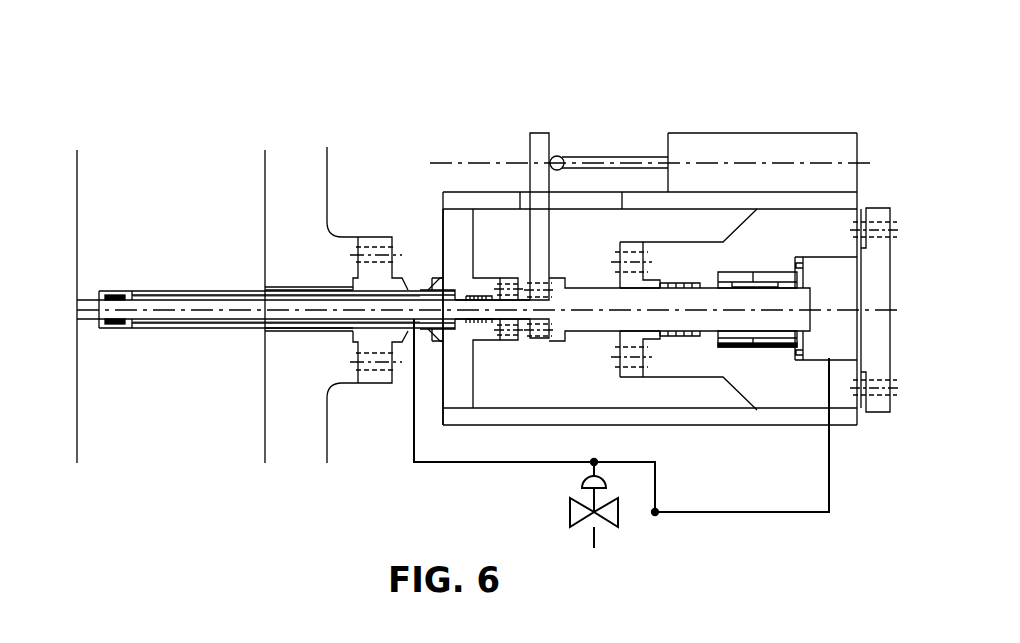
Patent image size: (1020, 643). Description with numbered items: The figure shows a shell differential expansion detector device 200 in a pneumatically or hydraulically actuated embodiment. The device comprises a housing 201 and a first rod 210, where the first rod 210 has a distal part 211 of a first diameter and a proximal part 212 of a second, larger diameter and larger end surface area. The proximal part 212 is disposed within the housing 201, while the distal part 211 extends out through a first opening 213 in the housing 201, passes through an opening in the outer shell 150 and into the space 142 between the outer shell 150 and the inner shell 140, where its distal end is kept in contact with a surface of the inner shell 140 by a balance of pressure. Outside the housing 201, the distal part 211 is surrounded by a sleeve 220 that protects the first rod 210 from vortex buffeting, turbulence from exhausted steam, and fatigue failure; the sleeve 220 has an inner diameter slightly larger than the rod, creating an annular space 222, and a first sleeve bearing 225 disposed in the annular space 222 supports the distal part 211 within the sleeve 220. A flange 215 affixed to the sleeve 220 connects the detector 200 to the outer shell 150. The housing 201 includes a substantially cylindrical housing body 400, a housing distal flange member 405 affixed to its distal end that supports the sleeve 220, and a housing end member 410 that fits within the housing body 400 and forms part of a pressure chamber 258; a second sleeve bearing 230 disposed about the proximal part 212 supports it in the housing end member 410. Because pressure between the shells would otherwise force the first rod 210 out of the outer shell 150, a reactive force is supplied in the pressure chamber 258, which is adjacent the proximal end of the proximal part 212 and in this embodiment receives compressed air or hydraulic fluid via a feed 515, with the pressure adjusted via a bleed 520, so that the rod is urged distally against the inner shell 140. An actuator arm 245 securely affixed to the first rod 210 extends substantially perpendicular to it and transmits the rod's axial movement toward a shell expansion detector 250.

The inner shell 140 is at (68, 268).
The space 142 is at (247, 272).
The outer shell 150 is at (315, 365).
The shell differential expansion detector device 200 is at (562, 75).
The housing 201 is at (520, 395).
The first rod 210 is at (468, 305).
The distal part 211 is at (168, 323).
The proximal part 212 is at (714, 320).
The first opening 213 is at (456, 278).
The flange 215 is at (368, 262).
The sleeve 220 is at (160, 291).
The annular space 222 is at (233, 321).
The first sleeve bearing 225 is at (113, 292).
The second sleeve bearing 230 is at (730, 268).
The actuator arm 245 is at (538, 230).
The shell expansion detector 250 is at (717, 159).
The pressure chamber 258 is at (842, 352).
The housing body 400 is at (454, 204).
The housing distal flange member 405 is at (452, 226).
The housing end member 410 is at (802, 226).
The feed 515 is at (570, 512).
The bleed 520 is at (582, 553).